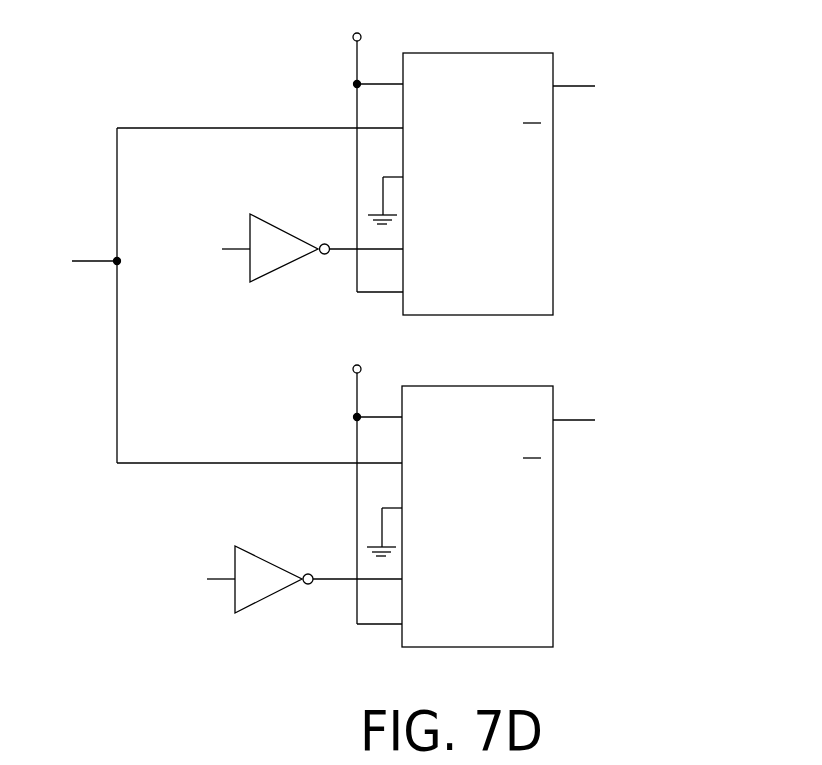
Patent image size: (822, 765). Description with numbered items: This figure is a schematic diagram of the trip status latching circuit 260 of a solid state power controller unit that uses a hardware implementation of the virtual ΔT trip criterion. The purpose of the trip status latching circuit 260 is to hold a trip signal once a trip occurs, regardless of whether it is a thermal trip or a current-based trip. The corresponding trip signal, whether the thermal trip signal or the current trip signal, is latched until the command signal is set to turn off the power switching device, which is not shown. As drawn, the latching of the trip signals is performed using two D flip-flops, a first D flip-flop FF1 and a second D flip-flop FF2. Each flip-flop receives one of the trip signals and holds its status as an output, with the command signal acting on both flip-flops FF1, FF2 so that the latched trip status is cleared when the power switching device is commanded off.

The trip status latching circuit 260 is at (83, 46).
The D flip-flop FF1 is at (478, 170).
The D flip-flop FF2 is at (477, 501).